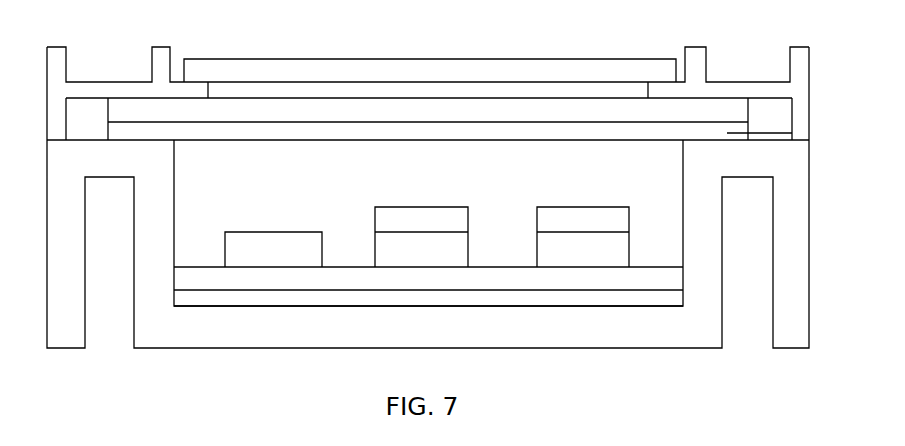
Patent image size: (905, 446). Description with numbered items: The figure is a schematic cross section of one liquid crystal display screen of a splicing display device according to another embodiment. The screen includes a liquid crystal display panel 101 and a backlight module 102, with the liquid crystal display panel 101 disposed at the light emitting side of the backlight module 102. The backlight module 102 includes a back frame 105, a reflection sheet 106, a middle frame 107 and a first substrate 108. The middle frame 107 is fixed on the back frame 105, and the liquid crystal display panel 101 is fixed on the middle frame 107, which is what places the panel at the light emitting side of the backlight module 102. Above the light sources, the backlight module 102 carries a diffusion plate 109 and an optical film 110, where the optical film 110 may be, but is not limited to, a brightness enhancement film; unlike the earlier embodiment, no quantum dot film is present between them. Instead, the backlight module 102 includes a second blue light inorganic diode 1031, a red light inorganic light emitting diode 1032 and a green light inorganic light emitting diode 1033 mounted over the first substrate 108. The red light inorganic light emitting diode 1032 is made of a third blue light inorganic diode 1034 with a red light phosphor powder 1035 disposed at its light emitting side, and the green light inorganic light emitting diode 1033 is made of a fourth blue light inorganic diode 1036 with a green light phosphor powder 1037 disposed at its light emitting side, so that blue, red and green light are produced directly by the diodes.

The liquid crystal display panel 101 is at (417, 62).
The backlight module 102 is at (355, 320).
The back frame 105 is at (153, 252).
The reflection sheet 106 is at (448, 295).
The middle frame 107 is at (748, 84).
The first substrate 108 is at (552, 282).
The diffusion plate 109 is at (796, 139).
The optical film 110 is at (727, 111).
The second blue light inorganic diode 1031 is at (270, 252).
The red light inorganic light emitting diode 1032 is at (382, 175).
The green light inorganic light emitting diode 1033 is at (542, 175).
The third blue light inorganic diode 1034 is at (432, 255).
The red light phosphor powder 1035 is at (395, 230).
The fourth blue light inorganic diode 1036 is at (592, 255).
The green light phosphor powder 1037 is at (555, 230).